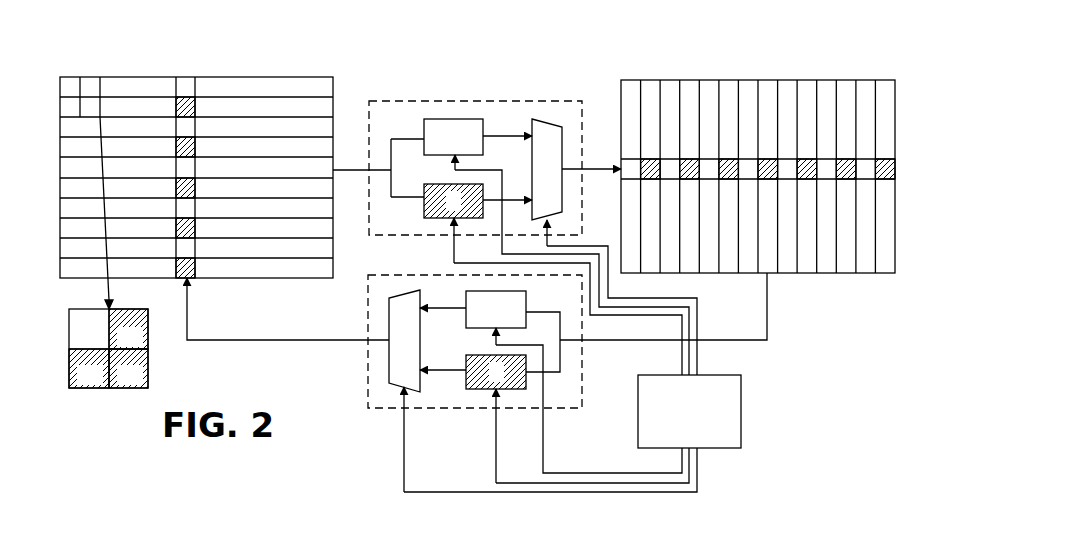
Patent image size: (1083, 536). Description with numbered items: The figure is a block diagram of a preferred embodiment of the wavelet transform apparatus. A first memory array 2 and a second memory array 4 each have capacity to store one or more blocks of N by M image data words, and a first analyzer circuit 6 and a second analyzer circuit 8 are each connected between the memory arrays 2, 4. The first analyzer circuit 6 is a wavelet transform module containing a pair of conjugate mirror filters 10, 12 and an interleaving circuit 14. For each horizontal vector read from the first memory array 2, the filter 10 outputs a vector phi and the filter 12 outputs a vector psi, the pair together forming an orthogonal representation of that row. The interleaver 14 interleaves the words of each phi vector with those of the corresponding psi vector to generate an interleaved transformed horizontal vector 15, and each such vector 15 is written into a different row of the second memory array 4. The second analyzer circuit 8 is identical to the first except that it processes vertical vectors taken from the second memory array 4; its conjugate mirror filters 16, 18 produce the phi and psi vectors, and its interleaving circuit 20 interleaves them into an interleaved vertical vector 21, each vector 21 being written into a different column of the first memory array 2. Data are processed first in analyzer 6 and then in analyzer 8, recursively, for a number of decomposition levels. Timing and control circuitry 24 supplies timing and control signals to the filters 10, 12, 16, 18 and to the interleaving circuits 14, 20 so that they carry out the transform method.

The first memory array 2 is at (277, 77).
The second memory array 4 is at (687, 80).
The first analyzer circuit 6 is at (408, 100).
The second analyzer circuit 8 is at (582, 377).
The conjugate mirror filter 10 is at (463, 118).
The conjugate mirror filter 12 is at (424, 188).
The interleaving circuit 14 is at (554, 118).
The interleaved transformed horizontal vector 15 is at (590, 173).
The conjugate mirror filter 16 is at (465, 292).
The conjugate mirror filter 18 is at (510, 390).
The interleaving circuit 20 is at (389, 368).
The interleaved vertical vector 21 is at (222, 340).
The timing and control circuitry 24 is at (741, 410).